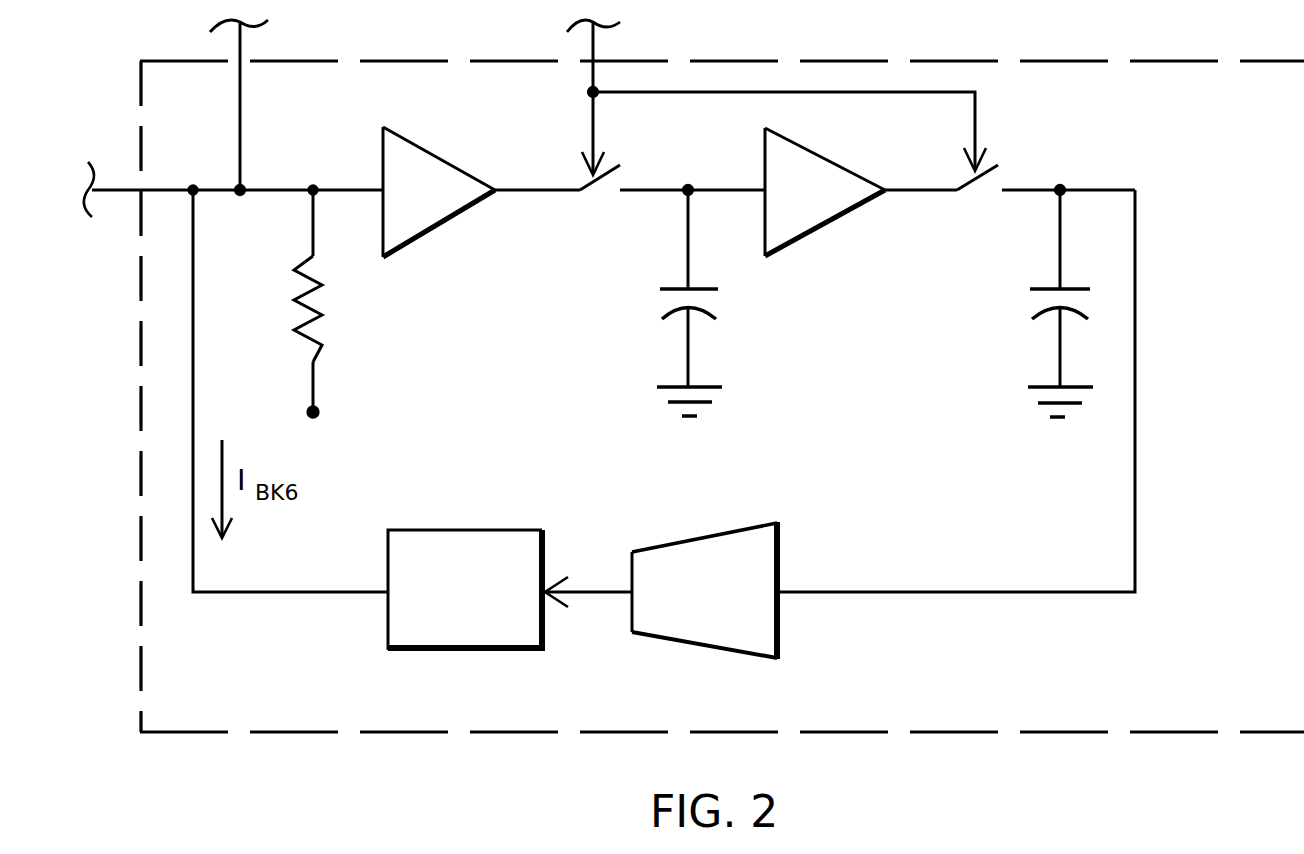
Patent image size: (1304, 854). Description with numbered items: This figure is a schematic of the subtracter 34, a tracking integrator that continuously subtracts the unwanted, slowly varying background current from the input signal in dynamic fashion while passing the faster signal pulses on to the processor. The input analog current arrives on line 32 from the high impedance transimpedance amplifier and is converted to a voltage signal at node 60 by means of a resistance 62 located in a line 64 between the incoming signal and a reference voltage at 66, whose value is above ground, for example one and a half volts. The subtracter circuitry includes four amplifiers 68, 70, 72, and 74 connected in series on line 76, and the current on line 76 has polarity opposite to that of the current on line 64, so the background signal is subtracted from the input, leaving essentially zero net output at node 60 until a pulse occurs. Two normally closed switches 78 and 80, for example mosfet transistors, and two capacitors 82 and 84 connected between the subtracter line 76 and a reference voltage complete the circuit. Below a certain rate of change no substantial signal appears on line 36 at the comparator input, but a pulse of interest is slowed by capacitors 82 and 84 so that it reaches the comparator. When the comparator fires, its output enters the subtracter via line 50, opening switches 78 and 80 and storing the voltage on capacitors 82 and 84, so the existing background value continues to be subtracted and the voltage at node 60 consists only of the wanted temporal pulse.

The line 32 is at (153, 194).
The subtracter 34 is at (503, 745).
The line 36 is at (240, 117).
The line 50 is at (593, 118).
The node 60 is at (240, 188).
The resistance 62 is at (334, 335).
The line 64 is at (313, 236).
The reference voltage 66 is at (310, 412).
The amplifier 68 is at (430, 152).
The amplifier 70 is at (815, 150).
The amplifier 72 is at (718, 535).
The amplifier 74 is at (430, 530).
The line 76 is at (193, 568).
The switch 78 is at (584, 205).
The switch 80 is at (955, 207).
The capacitor 82 is at (673, 286).
The capacitor 84 is at (1043, 287).